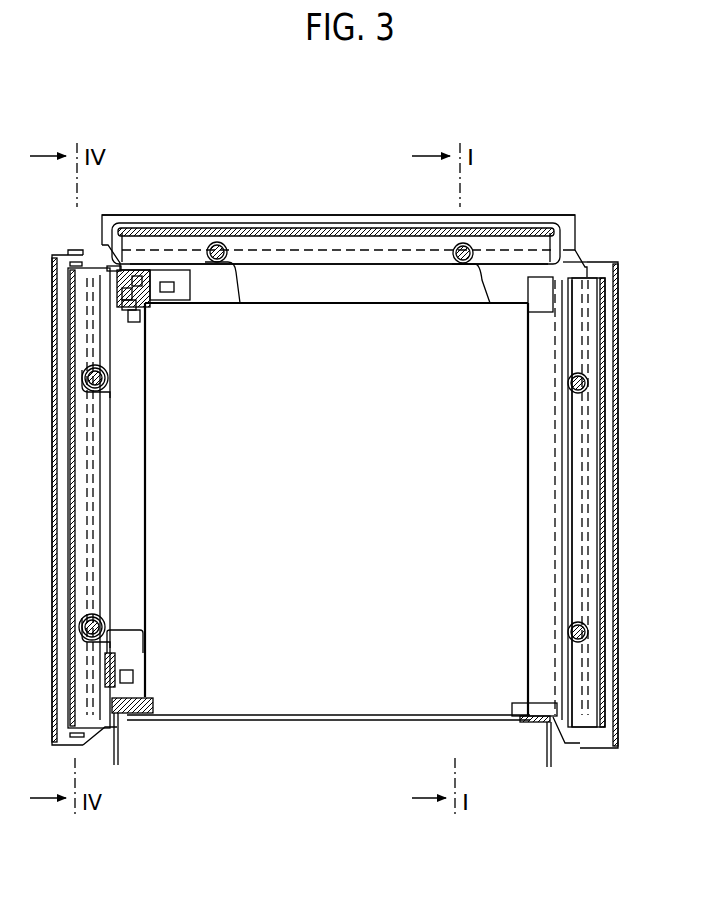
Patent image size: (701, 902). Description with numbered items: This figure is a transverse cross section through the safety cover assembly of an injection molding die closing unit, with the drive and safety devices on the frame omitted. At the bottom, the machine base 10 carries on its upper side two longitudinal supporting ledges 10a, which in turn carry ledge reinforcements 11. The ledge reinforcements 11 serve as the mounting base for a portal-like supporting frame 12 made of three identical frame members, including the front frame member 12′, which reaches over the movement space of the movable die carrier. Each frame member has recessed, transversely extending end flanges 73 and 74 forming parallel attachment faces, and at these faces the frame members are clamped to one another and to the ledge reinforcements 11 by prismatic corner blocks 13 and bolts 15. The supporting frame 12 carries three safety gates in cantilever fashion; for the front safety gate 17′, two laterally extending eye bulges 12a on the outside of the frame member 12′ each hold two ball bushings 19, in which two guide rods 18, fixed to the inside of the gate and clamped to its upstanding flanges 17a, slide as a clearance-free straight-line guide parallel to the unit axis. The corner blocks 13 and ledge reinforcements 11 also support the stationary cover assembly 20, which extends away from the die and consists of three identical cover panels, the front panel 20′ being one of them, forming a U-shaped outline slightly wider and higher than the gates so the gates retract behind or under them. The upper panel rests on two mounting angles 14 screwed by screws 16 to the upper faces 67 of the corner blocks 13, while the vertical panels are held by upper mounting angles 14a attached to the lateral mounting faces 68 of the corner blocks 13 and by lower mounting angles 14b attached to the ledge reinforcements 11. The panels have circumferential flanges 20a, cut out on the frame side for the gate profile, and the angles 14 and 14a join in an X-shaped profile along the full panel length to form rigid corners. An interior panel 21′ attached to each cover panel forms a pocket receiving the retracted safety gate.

The machine base 10 is at (122, 728).
The longitudinal supporting ledge 10a is at (532, 724).
The ledge reinforcement 11 is at (150, 716).
The supporting frame 12 is at (150, 540).
The front frame member 12′ is at (127, 482).
The eye bulge 12a is at (222, 265).
The corner block 13 is at (148, 300).
The mounting angle 14 is at (108, 250).
The upper mounting angle 14a is at (75, 250).
The lower mounting angle 14b is at (100, 742).
The bolt 15 is at (170, 290).
The screw 16 is at (126, 265).
The front safety gate 17′ is at (75, 500).
The gate flange 17a is at (595, 282).
The guide rod 18 is at (85, 385).
The ball bushing 19 is at (82, 375).
The stationary cover assembly 20 is at (497, 213).
The front cover panel 20′ is at (56, 435).
The circumferential flange 20a is at (236, 215).
The interior panel 21′ is at (96, 562).
The upper face 67 is at (140, 276).
The lateral mounting face 68 is at (122, 301).
The end flange 73 is at (180, 285).
The end flange 74 is at (125, 305).